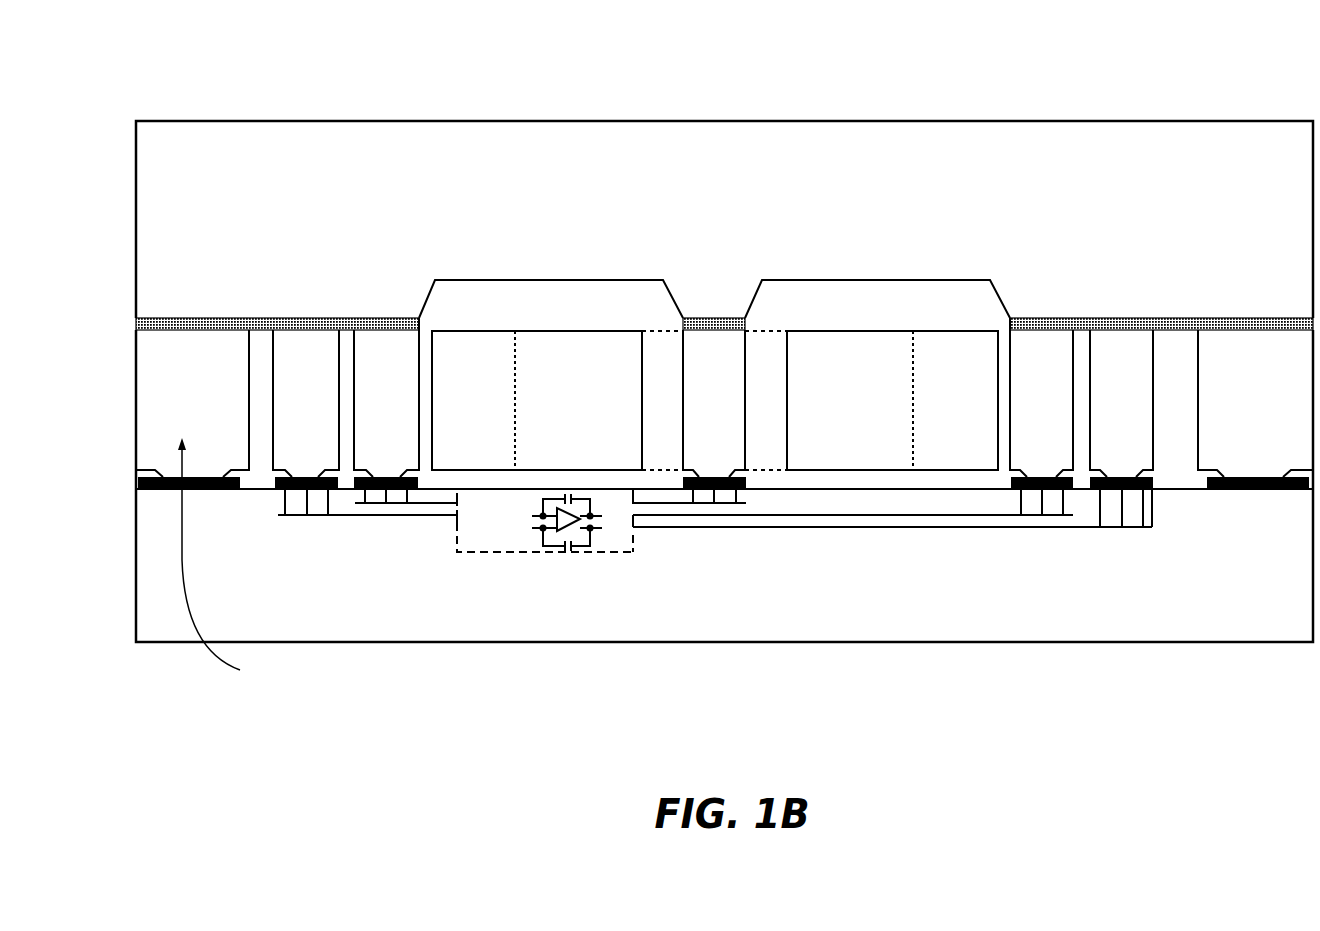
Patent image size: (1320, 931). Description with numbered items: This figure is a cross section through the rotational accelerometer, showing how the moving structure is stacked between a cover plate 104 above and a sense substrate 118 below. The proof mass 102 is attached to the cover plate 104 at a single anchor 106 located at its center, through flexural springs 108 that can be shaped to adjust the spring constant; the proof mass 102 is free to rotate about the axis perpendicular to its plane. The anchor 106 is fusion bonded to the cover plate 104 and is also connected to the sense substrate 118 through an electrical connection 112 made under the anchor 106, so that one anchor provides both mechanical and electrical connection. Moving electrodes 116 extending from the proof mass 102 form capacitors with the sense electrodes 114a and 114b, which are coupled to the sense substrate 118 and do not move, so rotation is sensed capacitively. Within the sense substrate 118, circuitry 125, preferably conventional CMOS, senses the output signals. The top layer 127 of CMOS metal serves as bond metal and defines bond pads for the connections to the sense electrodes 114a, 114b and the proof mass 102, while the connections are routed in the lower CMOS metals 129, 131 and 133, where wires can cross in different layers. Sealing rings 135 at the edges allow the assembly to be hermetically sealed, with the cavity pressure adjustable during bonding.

The proof mass 102 is at (830, 371).
The cover plate 104 is at (180, 184).
The anchor 106 is at (724, 432).
The flexural springs 108 is at (765, 371).
The electrical connection 112 is at (386, 464).
The sense electrode 114a is at (1046, 361).
The sense electrode 114b is at (1117, 361).
The moving electrodes 116 is at (965, 371).
The sense substrate 118 is at (337, 605).
The circuitry 125 is at (513, 521).
The top layer of metal 127 is at (676, 507).
The lower CMOS metal 129 is at (655, 520).
The lower CMOS metal 131 is at (642, 543).
The lower CMOS metal 133 is at (993, 535).
The sealing rings 135 is at (1258, 437).